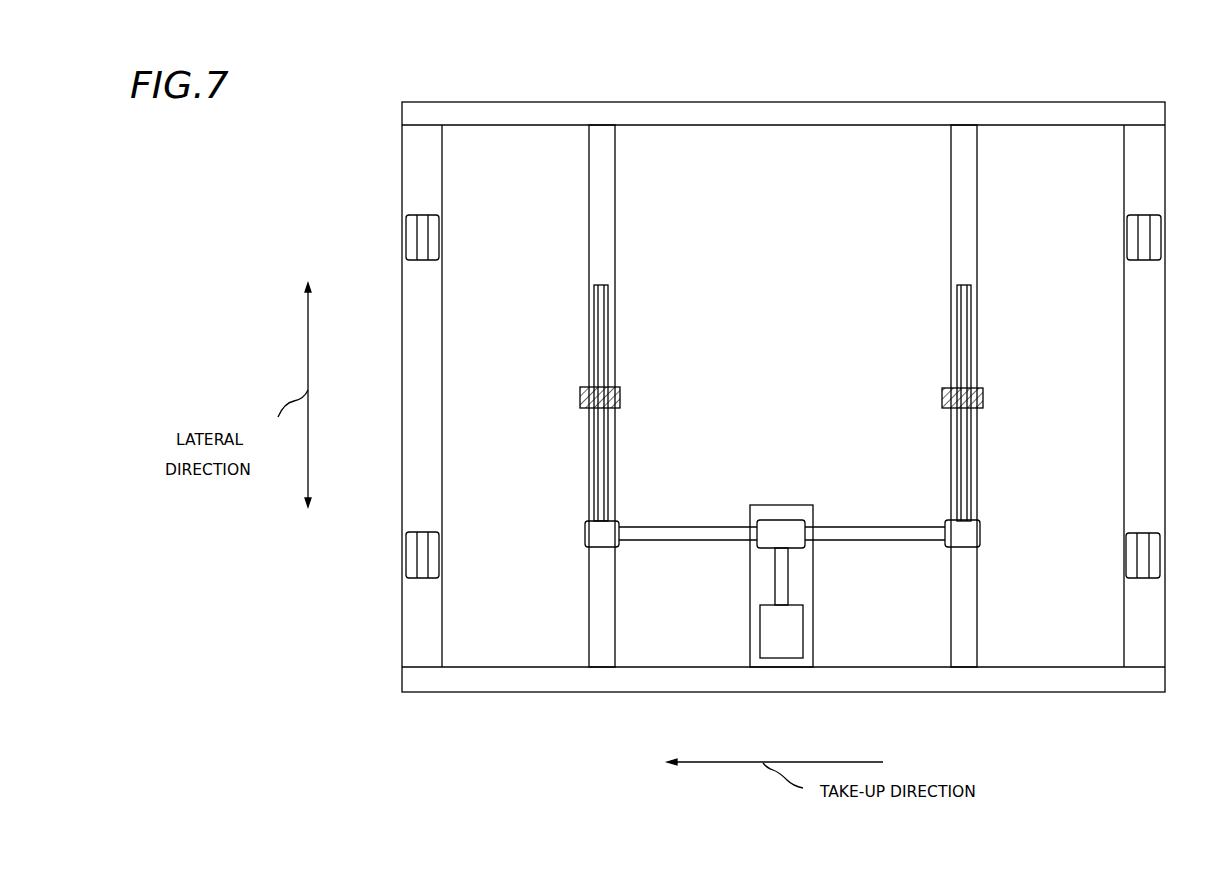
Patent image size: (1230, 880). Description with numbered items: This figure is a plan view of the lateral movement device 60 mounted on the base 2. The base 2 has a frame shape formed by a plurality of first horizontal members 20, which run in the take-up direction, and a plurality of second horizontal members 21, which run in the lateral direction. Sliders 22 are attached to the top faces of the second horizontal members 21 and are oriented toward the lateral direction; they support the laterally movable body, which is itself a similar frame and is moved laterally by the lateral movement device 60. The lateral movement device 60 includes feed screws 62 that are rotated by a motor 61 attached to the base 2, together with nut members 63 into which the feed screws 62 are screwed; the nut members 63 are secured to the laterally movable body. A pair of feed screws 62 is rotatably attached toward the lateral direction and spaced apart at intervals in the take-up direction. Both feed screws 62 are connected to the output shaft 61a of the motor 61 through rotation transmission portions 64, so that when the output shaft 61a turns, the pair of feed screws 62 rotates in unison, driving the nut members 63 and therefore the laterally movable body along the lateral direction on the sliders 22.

The base 2 is at (401, 158).
The first horizontal members 20 is at (835, 110).
The second horizontal members 21 is at (410, 362).
The sliders 22 is at (409, 233).
The lateral movement device 60 is at (844, 521).
The motor 61 is at (796, 628).
The output shaft 61a is at (786, 578).
The feed screws 62 is at (604, 468).
The nut members 63 is at (620, 400).
The rotation transmission portions 64 is at (585, 533).